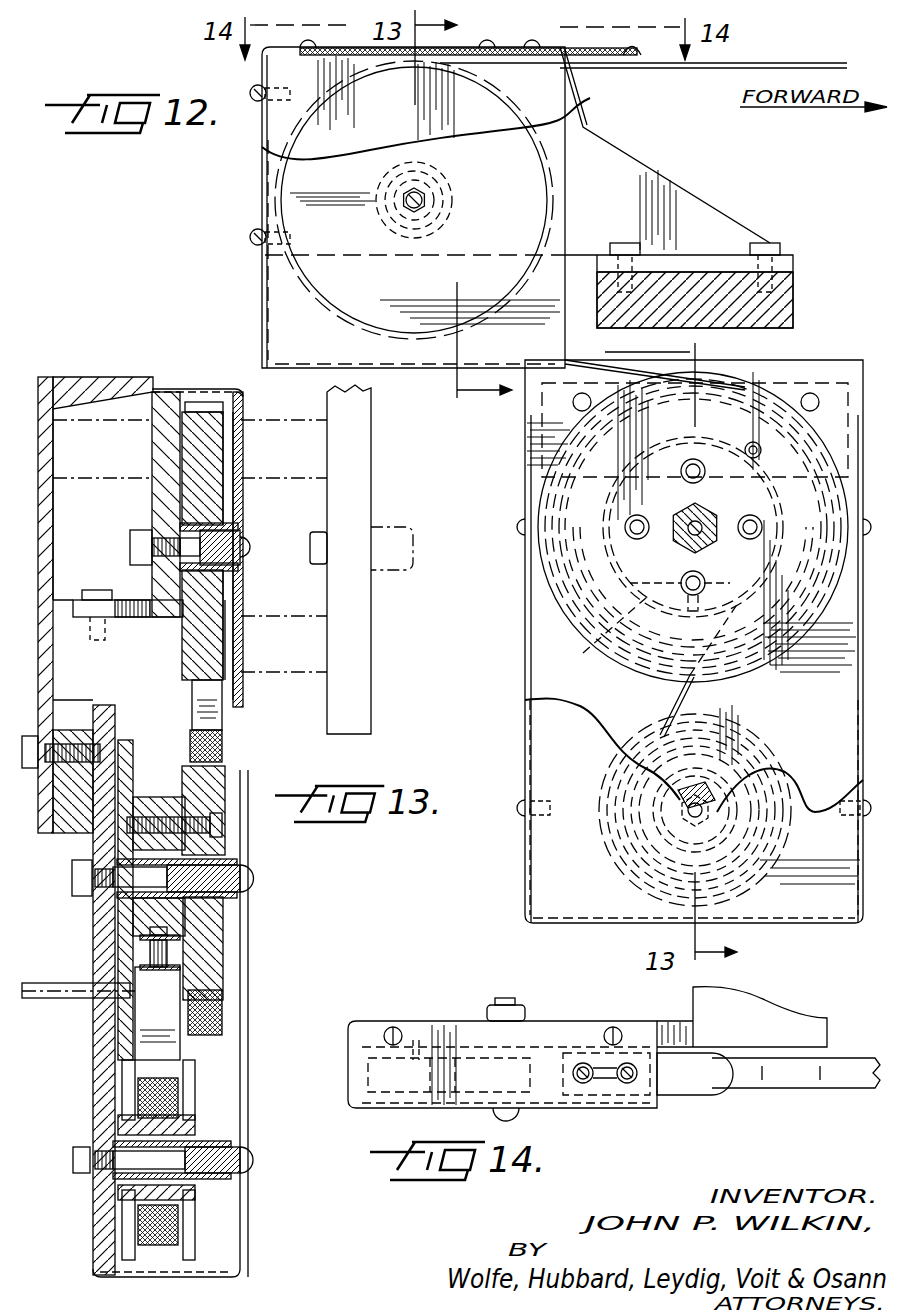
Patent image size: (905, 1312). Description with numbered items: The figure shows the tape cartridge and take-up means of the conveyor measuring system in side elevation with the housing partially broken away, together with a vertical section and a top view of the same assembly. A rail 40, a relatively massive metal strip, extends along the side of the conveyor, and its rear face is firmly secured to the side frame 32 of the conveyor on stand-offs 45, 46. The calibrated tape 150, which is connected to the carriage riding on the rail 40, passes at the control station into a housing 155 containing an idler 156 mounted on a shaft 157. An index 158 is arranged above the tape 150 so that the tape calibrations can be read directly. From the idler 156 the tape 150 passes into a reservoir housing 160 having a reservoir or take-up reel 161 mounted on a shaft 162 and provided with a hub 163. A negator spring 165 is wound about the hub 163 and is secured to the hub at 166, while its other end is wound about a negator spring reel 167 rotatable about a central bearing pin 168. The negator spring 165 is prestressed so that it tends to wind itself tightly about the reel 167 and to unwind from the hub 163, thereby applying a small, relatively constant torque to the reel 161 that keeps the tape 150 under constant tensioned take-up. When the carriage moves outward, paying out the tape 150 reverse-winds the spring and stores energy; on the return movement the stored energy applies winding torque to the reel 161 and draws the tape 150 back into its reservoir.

In FIG. 13, the side frame 32 is at (58, 380).
In FIG. 13, the rail 40 is at (366, 489).
In FIG. 13, the stand-off 45 is at (133, 478).
In FIG. 12, the stand-off 46 is at (789, 287).
In FIG. 13, the stand-off 46 is at (133, 672).
In FIG. 12, the tape 150 is at (777, 64).
In FIG. 13, the tape 150 is at (200, 410).
In FIG. 14, the tape 150 is at (836, 1092).
In FIG. 12, the housing 155 is at (265, 211).
In FIG. 13, the housing 155 is at (243, 412).
In FIG. 14, the housing 155 is at (468, 1033).
In FIG. 12, the idler 156 is at (454, 122).
In FIG. 13, the idler 156 is at (241, 609).
In FIG. 14, the idler 156 is at (413, 1057).
In FIG. 12, the shaft 157 is at (441, 186).
In FIG. 13, the shaft 157 is at (238, 534).
In FIG. 12, the index 158 is at (637, 50).
In FIG. 14, the index 158 is at (720, 1096).
In FIG. 13, the reservoir housing 160 is at (240, 1000).
In FIG. 14, the reservoir housing 160 is at (525, 752).
In FIG. 13, the take-up reel 161 is at (220, 962).
In FIG. 14, the take-up reel 161 is at (558, 603).
In FIG. 13, the shaft 162 is at (232, 870).
In FIG. 14, the shaft 162 is at (705, 512).
In FIG. 13, the hub 163 is at (142, 913).
In FIG. 14, the hub 163 is at (617, 632).
In FIG. 13, the negator spring 165 is at (140, 1040).
In FIG. 14, the negator spring 165 is at (665, 722).
In FIG. 13, the securing point 166 is at (142, 940).
In FIG. 14, the securing point 166 is at (686, 576).
In FIG. 13, the negator spring reel 167 is at (193, 1118).
In FIG. 14, the negator spring reel 167 is at (760, 742).
In FIG. 13, the central bearing pin 168 is at (225, 1150).
In FIG. 14, the central bearing pin 168 is at (717, 800).